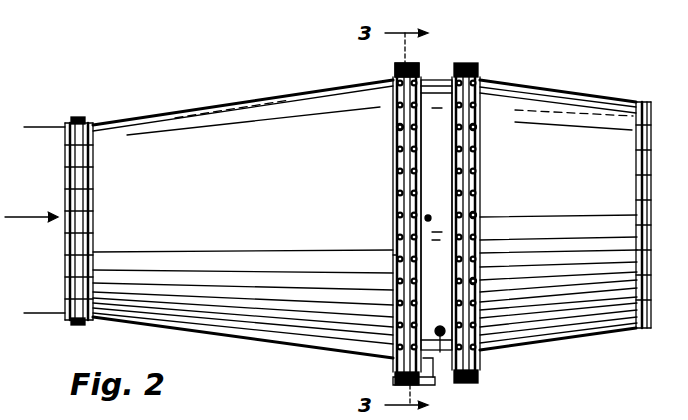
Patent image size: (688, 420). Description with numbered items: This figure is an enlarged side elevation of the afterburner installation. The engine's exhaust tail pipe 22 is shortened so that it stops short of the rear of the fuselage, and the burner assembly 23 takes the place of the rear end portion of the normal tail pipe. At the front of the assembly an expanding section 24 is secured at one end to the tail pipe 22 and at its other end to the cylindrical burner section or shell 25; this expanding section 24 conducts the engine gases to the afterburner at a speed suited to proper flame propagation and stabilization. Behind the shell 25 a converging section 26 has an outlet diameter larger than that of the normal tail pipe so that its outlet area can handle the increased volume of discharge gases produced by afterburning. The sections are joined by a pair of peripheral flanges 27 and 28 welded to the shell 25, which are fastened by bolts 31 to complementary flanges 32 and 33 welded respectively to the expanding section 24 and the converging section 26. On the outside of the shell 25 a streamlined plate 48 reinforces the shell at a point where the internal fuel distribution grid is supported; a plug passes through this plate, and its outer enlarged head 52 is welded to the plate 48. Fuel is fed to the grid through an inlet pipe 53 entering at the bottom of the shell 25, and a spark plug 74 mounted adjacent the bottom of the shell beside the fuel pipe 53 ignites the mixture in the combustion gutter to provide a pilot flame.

The exhaust tail pipe 22 is at (45, 318).
The burner assembly 23 is at (439, 73).
The expanding section 24 is at (236, 335).
The burner section or shell 25 is at (478, 177).
The converging section 26 is at (550, 338).
The peripheral welded flange 27 is at (432, 215).
The peripheral welded flange 28 is at (446, 243).
The bolts 31 is at (395, 124).
The complementary flange 32 is at (394, 264).
The complementary flange 33 is at (480, 270).
The streamlined plate 48 is at (397, 254).
The enlarged head 52 is at (433, 76).
The inlet pipe 53 is at (392, 378).
The spark plug 74 is at (446, 355).